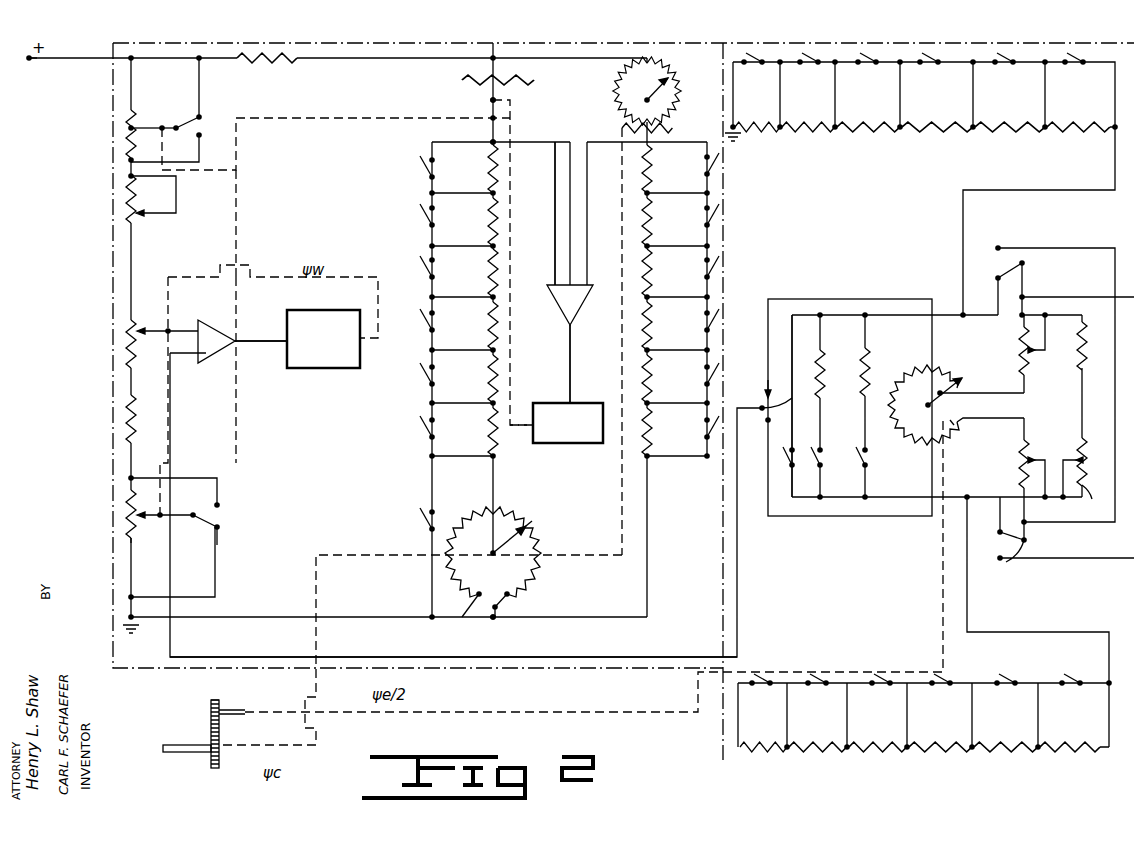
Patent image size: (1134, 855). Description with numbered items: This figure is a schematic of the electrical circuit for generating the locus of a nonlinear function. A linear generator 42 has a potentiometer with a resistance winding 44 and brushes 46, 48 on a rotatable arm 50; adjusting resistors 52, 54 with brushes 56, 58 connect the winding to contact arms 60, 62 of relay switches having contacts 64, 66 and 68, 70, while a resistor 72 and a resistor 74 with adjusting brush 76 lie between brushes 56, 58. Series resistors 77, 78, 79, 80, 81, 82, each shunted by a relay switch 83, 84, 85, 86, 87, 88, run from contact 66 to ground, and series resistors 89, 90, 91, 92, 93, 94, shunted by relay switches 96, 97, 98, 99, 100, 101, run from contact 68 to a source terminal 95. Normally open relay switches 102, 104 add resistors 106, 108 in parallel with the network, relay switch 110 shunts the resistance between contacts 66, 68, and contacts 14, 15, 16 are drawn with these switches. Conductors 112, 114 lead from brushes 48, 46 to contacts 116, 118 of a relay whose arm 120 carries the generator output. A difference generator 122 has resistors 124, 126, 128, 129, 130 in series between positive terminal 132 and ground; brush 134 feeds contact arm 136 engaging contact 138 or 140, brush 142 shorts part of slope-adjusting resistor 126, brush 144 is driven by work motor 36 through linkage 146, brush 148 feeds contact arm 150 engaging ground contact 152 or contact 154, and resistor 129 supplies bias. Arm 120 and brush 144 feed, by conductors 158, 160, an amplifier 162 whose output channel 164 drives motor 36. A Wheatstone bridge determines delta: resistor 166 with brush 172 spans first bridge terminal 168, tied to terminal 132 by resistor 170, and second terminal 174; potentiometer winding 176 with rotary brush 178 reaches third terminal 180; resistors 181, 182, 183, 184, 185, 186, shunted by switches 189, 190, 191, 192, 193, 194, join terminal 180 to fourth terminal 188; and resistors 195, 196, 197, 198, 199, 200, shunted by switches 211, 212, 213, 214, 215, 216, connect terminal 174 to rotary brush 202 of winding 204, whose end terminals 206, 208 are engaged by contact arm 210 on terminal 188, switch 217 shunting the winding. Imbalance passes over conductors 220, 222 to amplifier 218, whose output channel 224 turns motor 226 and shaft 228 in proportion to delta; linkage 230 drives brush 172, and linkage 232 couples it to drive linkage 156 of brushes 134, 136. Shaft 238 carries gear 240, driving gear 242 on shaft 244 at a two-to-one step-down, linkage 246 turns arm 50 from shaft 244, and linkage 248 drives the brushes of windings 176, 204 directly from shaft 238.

The switch contact 14 is at (801, 442).
The switch contact 15 is at (833, 442).
The switch contact 16 is at (878, 442).
The work motor 36 is at (320, 370).
The linear generator 42 is at (1040, 44).
The resistance winding 44 is at (940, 368).
The brush 46 is at (935, 432).
The brush 48 is at (963, 380).
The rotatable arm 50 is at (942, 395).
The adjusting resistor 52 is at (1032, 352).
The adjusting resistor 54 is at (1028, 450).
The brush 56 is at (1020, 348).
The brush 58 is at (1045, 462).
The contact arm 60 is at (1022, 262).
The contact arm 62 is at (1012, 560).
The contact 64 is at (998, 248).
The contact 66 is at (998, 278).
The contact 68 is at (998, 530).
The contact 70 is at (998, 562).
The resistor 72 is at (1086, 345).
The resistor 74 is at (1086, 448).
The adjusting brush 76 is at (1097, 499).
The series-connected resistor 77 is at (1075, 132).
The series-connected resistor 78 is at (1015, 132).
The series-connected resistor 79 is at (955, 132).
The series-connected resistor 80 is at (880, 132).
The series-connected resistor 81 is at (820, 132).
The series-connected resistor 82 is at (760, 132).
The relay switch 83 is at (1079, 64).
The relay switch 84 is at (1009, 64).
The relay switch 85 is at (934, 64).
The relay switch 86 is at (872, 64).
The relay switch 87 is at (814, 64).
The relay switch 88 is at (758, 64).
The series-connected resistor 89 is at (1082, 752).
The series-connected resistor 90 is at (1010, 752).
The series-connected resistor 91 is at (952, 752).
The series-connected resistor 92 is at (890, 752).
The series-connected resistor 93 is at (830, 752).
The series-connected resistor 94 is at (770, 752).
The terminal 95 is at (738, 770).
The relay switch 96 is at (1078, 668).
The relay switch 97 is at (1003, 678).
The relay switch 98 is at (948, 672).
The relay switch 99 is at (878, 678).
The relay switch 100 is at (814, 678).
The relay switch 101 is at (758, 678).
The normally open relay switch 102 is at (868, 470).
The normally open relay switch 104 is at (823, 470).
The resistor 106 is at (868, 350).
The resistor 108 is at (837, 347).
The normally open relay switch 110 is at (795, 470).
The conductor 112 is at (880, 299).
The conductor 114 is at (880, 516).
The contact 116 is at (768, 384).
The contact 118 is at (766, 422).
The contact arm 120 is at (791, 407).
The difference generator 122 is at (110, 576).
The resistor 124 is at (125, 124).
The resistor 126 is at (124, 204).
The resistor 128 is at (120, 335).
The resistor 129 is at (134, 426).
The resistor 130 is at (118, 504).
The terminal 132 is at (35, 62).
The brush 134 is at (142, 125).
The relay contact arm 136 is at (180, 115).
The contact 138 is at (204, 116).
The contact 140 is at (199, 135).
The brush 142 is at (144, 216).
The brush 144 is at (144, 324).
The linkage 146 is at (238, 265).
The brush 148 is at (132, 540).
The relay contact arm 150 is at (222, 522).
The contact 152 is at (220, 540).
The contact 154 is at (220, 505).
The drive linkage 156 is at (237, 225).
The conductor 158 is at (592, 656).
The conductor 160 is at (182, 328).
The amplifier 162 is at (212, 356).
The output channel 164 is at (264, 338).
The resistor 166 is at (525, 85).
The first bridge terminal 168 is at (495, 46).
The resistor 170 is at (280, 65).
The brush 172 is at (492, 100).
The second bridge terminal 174 is at (491, 144).
The potentiometer winding 176 is at (672, 66).
The rotary brush 178 is at (672, 88).
The third bridge terminal 180 is at (673, 128).
The series-connected resistor 181 is at (642, 172).
The series-connected resistor 182 is at (642, 220).
The series-connected resistor 183 is at (642, 267).
The series-connected resistor 184 is at (644, 312).
The series-connected resistor 185 is at (642, 364).
The series-connected resistor 186 is at (642, 412).
The fourth bridge terminal 188 is at (495, 620).
The normally open relay switch 189 is at (712, 172).
The normally open relay switch 190 is at (712, 224).
The normally open relay switch 191 is at (712, 276).
The normally open relay switch 192 is at (706, 326).
The normally open relay switch 193 is at (706, 376).
The normally open relay switch 194 is at (710, 440).
The resistor 195 is at (500, 172).
The resistor 196 is at (500, 225).
The resistor 197 is at (500, 277).
The resistor 198 is at (500, 332).
The resistor 199 is at (500, 372).
The resistor 200 is at (500, 442).
The rotary brush 202 is at (525, 525).
The potentiometer winding 204 is at (530, 535).
The end terminal 206 is at (470, 606).
The end terminal 208 is at (510, 600).
The switch contact arm 210 is at (501, 564).
The normally open relay switch 211 is at (420, 174).
The normally open relay switch 212 is at (424, 222).
The normally open relay switch 213 is at (424, 272).
The normally open relay switch 214 is at (424, 326).
The normally open relay switch 215 is at (422, 380).
The normally open relay switch 216 is at (420, 432).
The normally open relay switch 217 is at (422, 522).
The amplifier 218 is at (582, 282).
The conductor 220 is at (603, 339).
The conductor 222 is at (554, 204).
The output channel 224 is at (571, 360).
The motor 226 is at (580, 445).
The motor shaft 228 is at (517, 420).
The linkage 230 is at (512, 118).
The linkage 232 is at (338, 118).
The shaft 238 is at (200, 735).
The gear 240 is at (216, 770).
The gear 242 is at (215, 700).
The shaft 244 is at (245, 710).
The mechanical linkage 246 is at (485, 715).
The linkage 248 is at (318, 596).